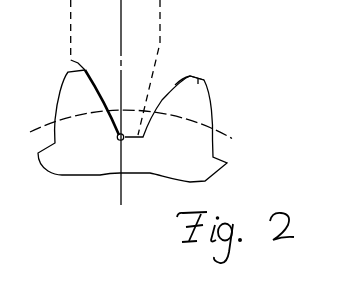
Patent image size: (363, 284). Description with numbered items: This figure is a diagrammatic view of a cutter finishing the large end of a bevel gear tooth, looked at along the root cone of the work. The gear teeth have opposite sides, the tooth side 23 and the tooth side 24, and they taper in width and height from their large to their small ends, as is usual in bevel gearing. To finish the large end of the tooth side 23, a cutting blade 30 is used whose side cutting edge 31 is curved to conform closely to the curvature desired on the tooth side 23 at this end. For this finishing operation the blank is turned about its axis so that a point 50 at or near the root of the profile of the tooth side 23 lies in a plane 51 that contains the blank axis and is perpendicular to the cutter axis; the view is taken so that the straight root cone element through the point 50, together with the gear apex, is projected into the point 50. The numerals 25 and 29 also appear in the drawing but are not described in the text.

The tooth side 23 is at (100, 87).
The tooth side 24 is at (177, 84).
The tooth tip 25 is at (198, 79).
The reference line 29 is at (299, 5).
The cutting blade 30 is at (153, 32).
The side cutting edge 31 is at (77, 63).
The point at or near the root of the profile 50 is at (118, 140).
The plane 51 is at (122, 194).